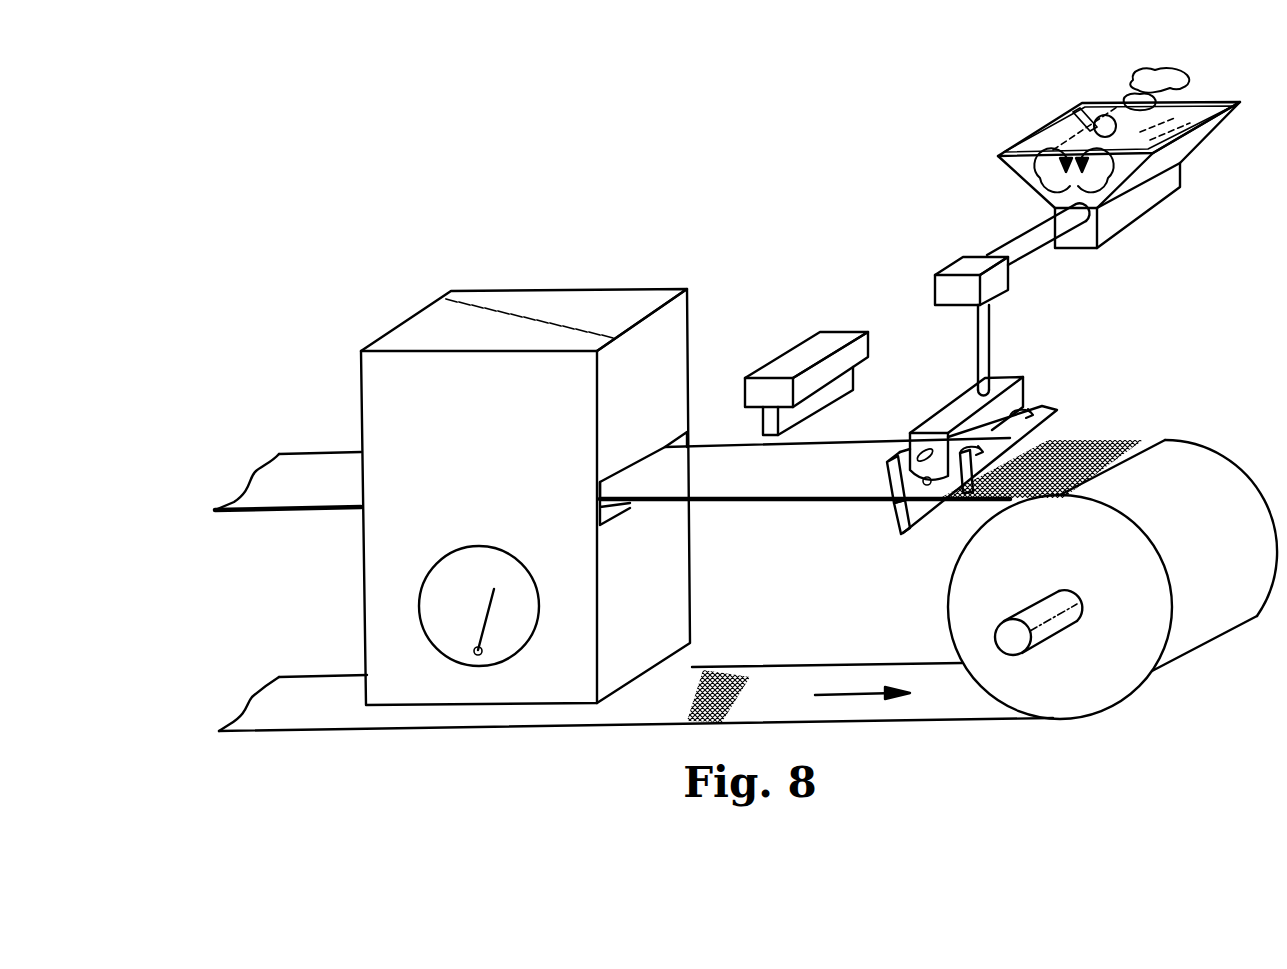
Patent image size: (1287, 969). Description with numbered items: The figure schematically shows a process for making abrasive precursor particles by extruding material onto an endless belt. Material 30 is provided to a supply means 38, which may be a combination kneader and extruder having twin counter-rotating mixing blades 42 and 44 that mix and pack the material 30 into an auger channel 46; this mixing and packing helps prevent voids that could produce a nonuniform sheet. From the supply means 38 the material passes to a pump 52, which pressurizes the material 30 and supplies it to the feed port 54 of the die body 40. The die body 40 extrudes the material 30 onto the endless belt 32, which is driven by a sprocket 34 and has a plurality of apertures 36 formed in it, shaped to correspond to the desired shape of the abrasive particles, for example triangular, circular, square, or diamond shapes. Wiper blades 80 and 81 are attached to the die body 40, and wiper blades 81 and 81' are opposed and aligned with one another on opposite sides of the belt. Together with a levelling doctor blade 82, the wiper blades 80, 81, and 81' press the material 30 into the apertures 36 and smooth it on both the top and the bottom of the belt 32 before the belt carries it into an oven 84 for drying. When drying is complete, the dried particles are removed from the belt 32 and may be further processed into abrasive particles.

The material 30 is at (778, 503).
The endless belt 32 is at (795, 692).
The sprocket 34 is at (1117, 675).
The apertures 36 is at (1099, 438).
The supply means 38 is at (1185, 193).
The die body 40 is at (1030, 386).
The mixing blade 42 is at (1068, 108).
The mixing blade 44 is at (1195, 102).
The auger channel 46 is at (1017, 240).
The pump 52 is at (950, 286).
The feed port 54 is at (975, 385).
The wiper blade 80 is at (965, 494).
The wiper blade 81 is at (880, 457).
The wiper blade 81' is at (878, 540).
The levelling doctor blade 82 is at (803, 352).
The oven 84 is at (466, 480).